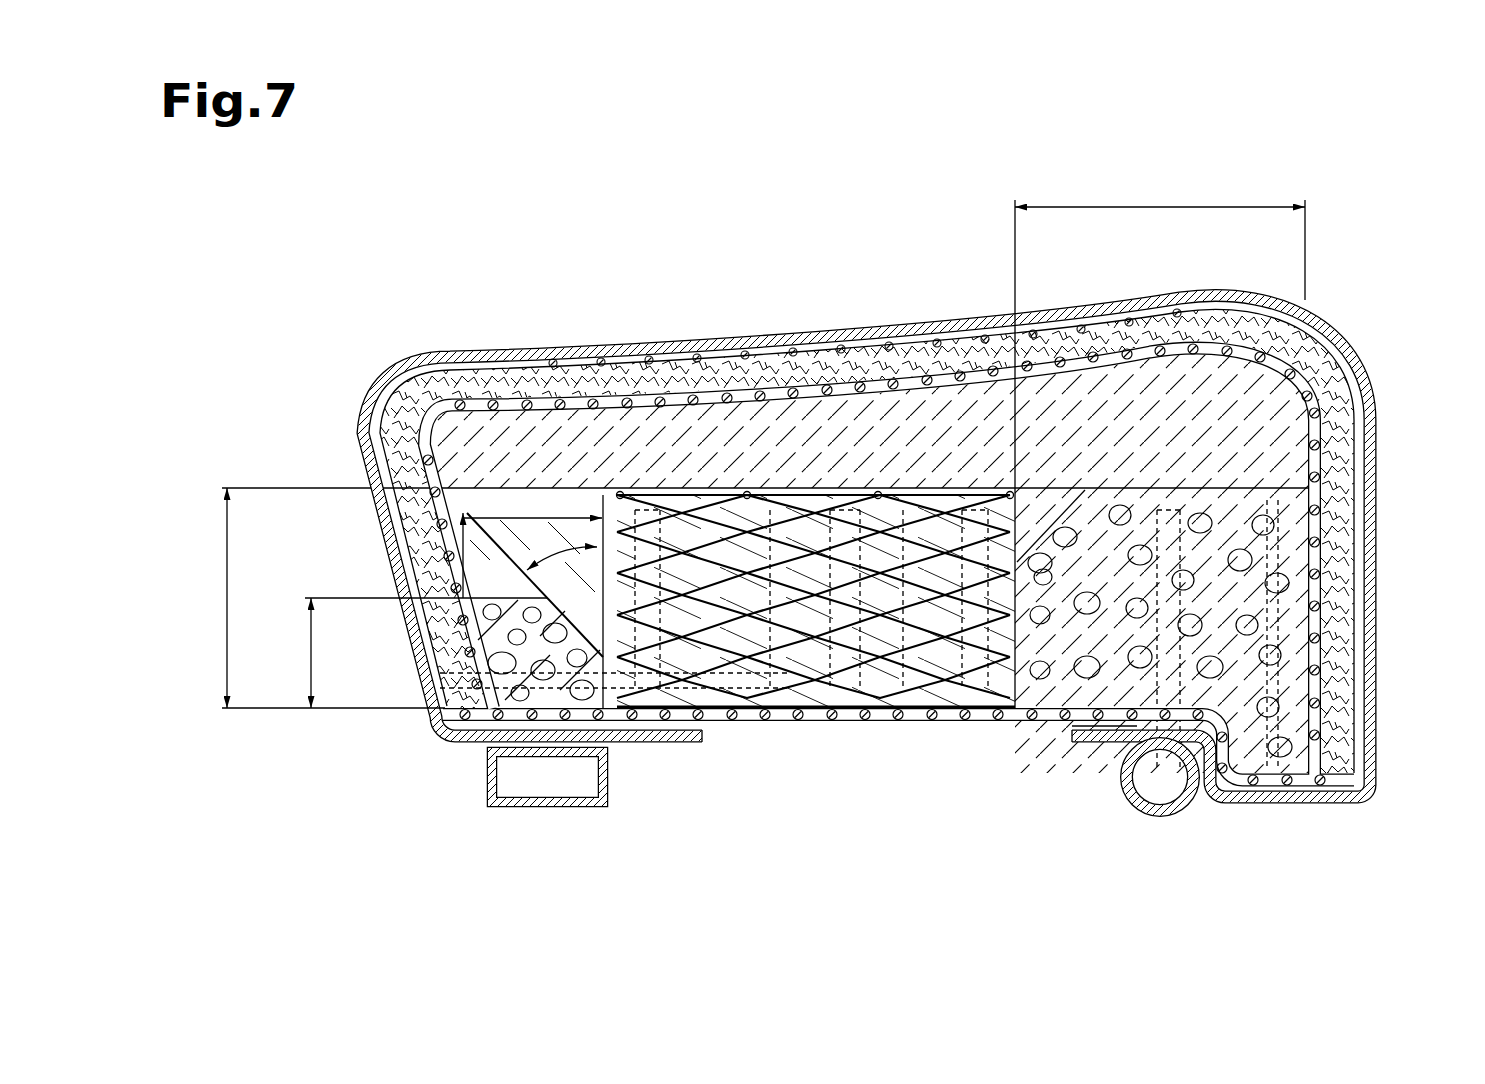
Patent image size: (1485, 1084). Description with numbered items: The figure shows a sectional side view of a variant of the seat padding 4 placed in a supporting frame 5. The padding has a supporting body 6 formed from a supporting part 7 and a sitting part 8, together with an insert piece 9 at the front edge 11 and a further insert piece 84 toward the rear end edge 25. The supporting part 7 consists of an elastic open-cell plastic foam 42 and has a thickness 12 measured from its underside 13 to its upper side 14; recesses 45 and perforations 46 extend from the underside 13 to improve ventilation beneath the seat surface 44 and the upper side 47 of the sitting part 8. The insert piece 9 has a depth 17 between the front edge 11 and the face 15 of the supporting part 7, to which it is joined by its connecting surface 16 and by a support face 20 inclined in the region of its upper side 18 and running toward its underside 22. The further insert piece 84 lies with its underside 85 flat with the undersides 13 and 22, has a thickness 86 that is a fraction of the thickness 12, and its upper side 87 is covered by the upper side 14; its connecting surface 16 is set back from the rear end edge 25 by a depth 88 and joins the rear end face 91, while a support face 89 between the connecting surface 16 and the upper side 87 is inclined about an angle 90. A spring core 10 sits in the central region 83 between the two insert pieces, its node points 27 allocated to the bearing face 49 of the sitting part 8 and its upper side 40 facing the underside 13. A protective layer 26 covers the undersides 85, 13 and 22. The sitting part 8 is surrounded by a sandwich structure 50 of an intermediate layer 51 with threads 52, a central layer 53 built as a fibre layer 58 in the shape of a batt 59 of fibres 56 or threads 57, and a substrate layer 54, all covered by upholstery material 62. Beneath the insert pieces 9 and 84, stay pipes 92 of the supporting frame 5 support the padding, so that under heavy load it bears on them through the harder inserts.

The seat padding 4 is at (1378, 190).
The supporting frame 5 is at (463, 808).
The supporting body 6 is at (1348, 302).
The supporting part 7 is at (818, 709).
The sitting part 8 is at (1088, 395).
The insert piece 9 is at (1372, 758).
The spring core 10 is at (808, 488).
The front edge 11 is at (1368, 573).
The thickness 12 is at (225, 598).
The underside 13 is at (703, 723).
The upper side 14 is at (422, 378).
The face 15 is at (1022, 700).
The connecting surface 16 is at (634, 721).
The depth 17 is at (1166, 205).
The upper side 18 is at (1228, 478).
The support face 20 is at (1068, 490).
The underside 22 is at (1056, 723).
The rear end edge 25 is at (395, 498).
The protective layer 26 is at (1009, 724).
The node points 27 is at (620, 488).
The upper side 40 is at (773, 723).
The plastic foam 42 is at (396, 455).
The seat surface 44 is at (800, 335).
The recesses 45 is at (853, 712).
The perforations 46 is at (935, 380).
The upper side 47 is at (875, 385).
The bearing face 49 is at (540, 585).
The sandwich structure 50 is at (1337, 775).
The intermediate layer 51 is at (1325, 491).
The threads 52 is at (1140, 358).
The central layer 53 is at (628, 375).
The substrate layer 54 is at (920, 330).
The fibres 56 is at (722, 355).
The threads 57 is at (1353, 638).
The fibre layer 58 is at (1183, 325).
The batt 59 is at (1333, 380).
The upholstery material 62 is at (1278, 803).
The central region 83 is at (843, 731).
The further insert piece 84 is at (455, 738).
The underside 85 is at (556, 748).
The thickness 86 is at (310, 655).
The upper side 87 is at (527, 573).
The depth 88 is at (385, 438).
The support face 89 is at (612, 640).
The angle 90 is at (560, 575).
The rear end face 91 is at (610, 758).
The stay pipes 92 is at (520, 802).